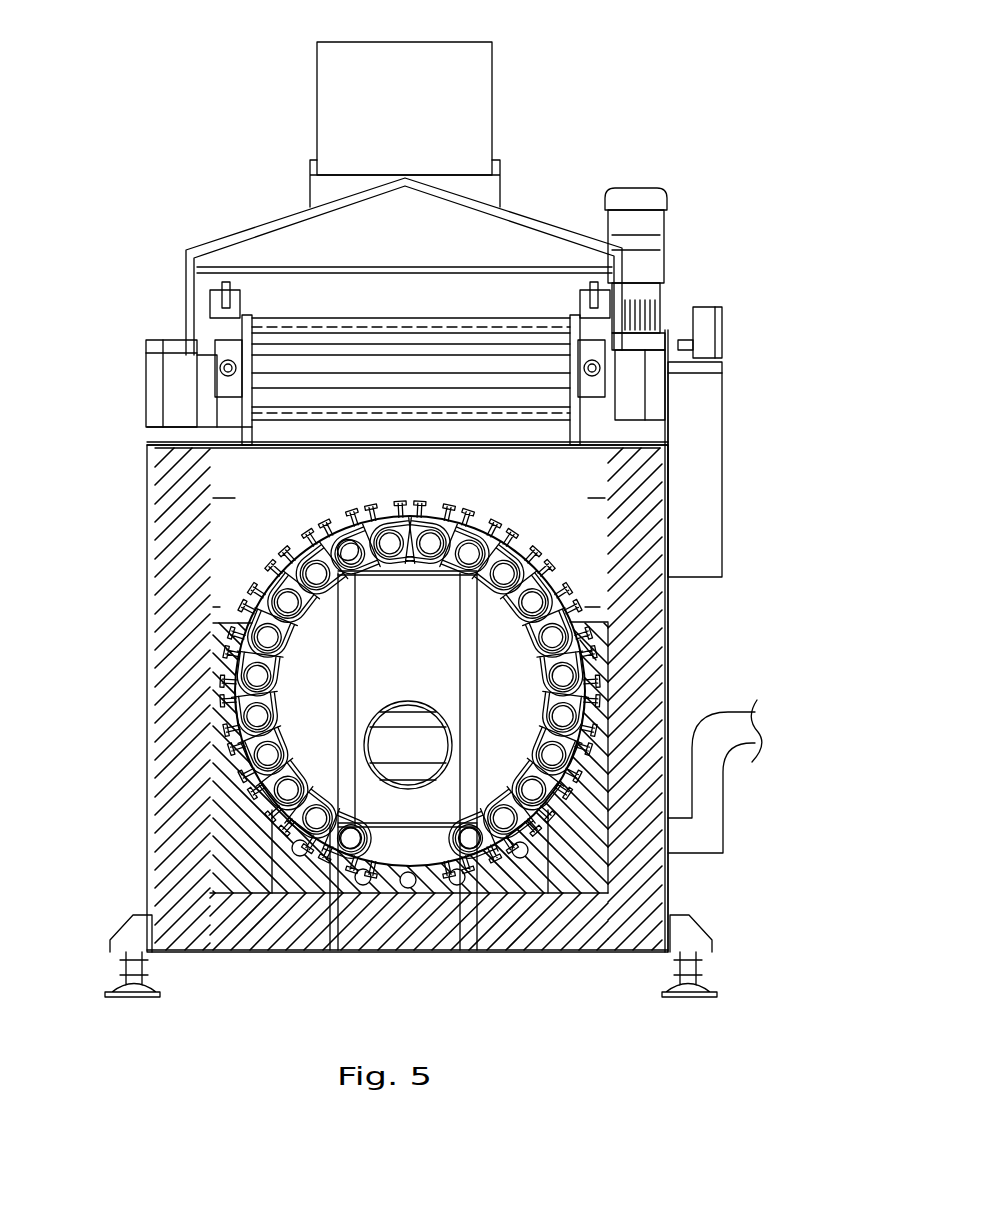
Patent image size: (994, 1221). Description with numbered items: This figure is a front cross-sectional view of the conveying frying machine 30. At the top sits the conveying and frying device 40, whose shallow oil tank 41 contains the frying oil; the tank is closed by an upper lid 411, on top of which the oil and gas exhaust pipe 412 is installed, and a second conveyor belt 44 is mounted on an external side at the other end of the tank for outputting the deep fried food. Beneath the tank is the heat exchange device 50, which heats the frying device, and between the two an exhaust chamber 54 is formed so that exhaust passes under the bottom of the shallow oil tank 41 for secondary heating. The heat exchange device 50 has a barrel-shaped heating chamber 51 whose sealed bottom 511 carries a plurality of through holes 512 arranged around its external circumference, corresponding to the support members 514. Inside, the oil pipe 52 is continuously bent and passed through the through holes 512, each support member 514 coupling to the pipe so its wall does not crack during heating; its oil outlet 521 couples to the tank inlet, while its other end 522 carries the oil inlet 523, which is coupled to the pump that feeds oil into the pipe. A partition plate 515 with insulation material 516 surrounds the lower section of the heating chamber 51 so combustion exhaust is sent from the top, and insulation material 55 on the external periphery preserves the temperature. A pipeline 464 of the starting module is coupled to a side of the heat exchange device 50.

The conveying frying machine 30 is at (618, 116).
The conveying and frying device 40 is at (216, 228).
The shallow oil tank 41 is at (300, 425).
The upper lid 411 is at (271, 232).
The oil and gas exhaust pipe 412 is at (467, 76).
The second conveyor belt 44 is at (512, 304).
The heat exchange device 50 is at (130, 600).
The heating chamber 51 is at (565, 604).
The sealed bottom 511 is at (270, 585).
The through holes 512 is at (590, 700).
The support members 514 is at (592, 660).
The partition plate 515 is at (205, 760).
The insulation material 516 is at (240, 855).
The oil pipe 52 is at (298, 558).
The oil outlet 521 is at (335, 858).
The other end 522 is at (350, 553).
The oil inlet 523 is at (462, 848).
The exhaust chamber 54 is at (525, 490).
The insulation material 55 is at (633, 627).
The pipeline 464 is at (710, 788).